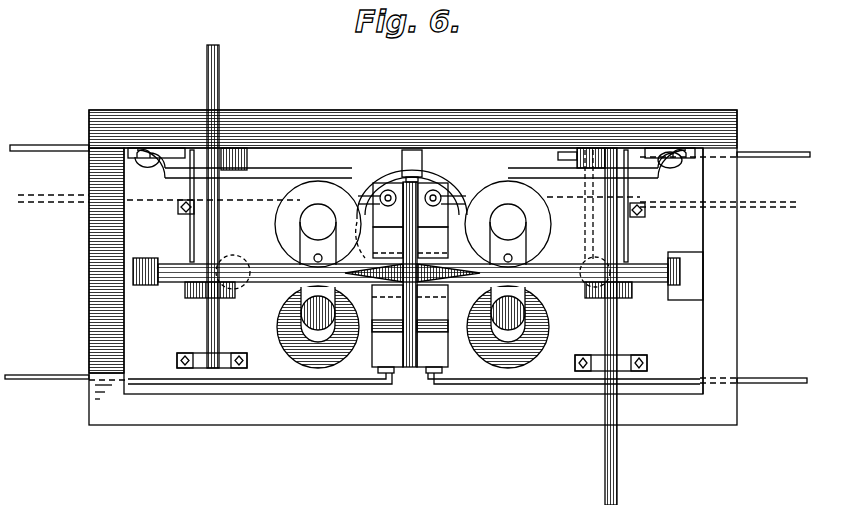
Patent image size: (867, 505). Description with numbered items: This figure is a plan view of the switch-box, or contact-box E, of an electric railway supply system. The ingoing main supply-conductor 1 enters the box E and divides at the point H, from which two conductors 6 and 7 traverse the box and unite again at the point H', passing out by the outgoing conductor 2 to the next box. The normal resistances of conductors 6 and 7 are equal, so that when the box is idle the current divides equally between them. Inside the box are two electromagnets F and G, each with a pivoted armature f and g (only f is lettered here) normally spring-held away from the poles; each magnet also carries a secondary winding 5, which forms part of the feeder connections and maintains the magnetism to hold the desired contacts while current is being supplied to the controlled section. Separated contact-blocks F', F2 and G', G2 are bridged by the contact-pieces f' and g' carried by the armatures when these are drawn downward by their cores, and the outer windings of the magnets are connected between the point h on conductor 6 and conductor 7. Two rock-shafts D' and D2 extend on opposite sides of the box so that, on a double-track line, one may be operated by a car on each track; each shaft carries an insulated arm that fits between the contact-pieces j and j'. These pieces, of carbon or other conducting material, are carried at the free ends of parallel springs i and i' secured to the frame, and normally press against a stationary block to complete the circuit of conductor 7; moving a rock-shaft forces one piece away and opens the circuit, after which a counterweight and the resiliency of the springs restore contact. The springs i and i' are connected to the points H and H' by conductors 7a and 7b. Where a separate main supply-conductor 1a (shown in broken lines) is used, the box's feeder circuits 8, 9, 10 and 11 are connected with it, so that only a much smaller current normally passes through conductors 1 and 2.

The ingoing main supply-conductor 1 is at (50, 147).
The separate main supply-conductor 1a is at (159, 189).
The outgoing main supply-conductor 2 is at (678, 171).
The secondary winding 5 is at (358, 238).
The conductor 6 is at (340, 163).
The conductor 7 is at (279, 163).
The conductor 7a is at (168, 160).
The conductor 7b is at (673, 152).
The circuit 8 is at (152, 168).
The supply-conductor 9 is at (548, 270).
The circuit 10 is at (603, 174).
The supply-conductor 11 is at (62, 371).
The rock-shaft D' is at (212, 206).
The rock-shaft D2 is at (617, 330).
The contact-box E is at (413, 238).
The electromagnet F is at (318, 224).
The contact-block F' is at (388, 205).
The contact-block F2 is at (265, 334).
The pivoted armature f is at (418, 276).
The contact-piece f' is at (388, 242).
The electromagnet G is at (508, 224).
The contact-block G' is at (433, 205).
The contact-block G2 is at (558, 334).
The contact-piece g' is at (433, 242).
The dividing point H is at (413, 257).
The uniting point H' is at (706, 242).
The connection point h is at (412, 258).
The spring i is at (395, 205).
The spring i' is at (414, 231).
The contact-piece j is at (201, 307).
The contact-piece j' is at (427, 307).